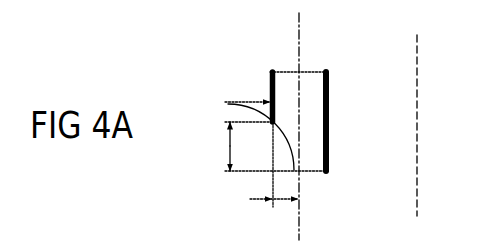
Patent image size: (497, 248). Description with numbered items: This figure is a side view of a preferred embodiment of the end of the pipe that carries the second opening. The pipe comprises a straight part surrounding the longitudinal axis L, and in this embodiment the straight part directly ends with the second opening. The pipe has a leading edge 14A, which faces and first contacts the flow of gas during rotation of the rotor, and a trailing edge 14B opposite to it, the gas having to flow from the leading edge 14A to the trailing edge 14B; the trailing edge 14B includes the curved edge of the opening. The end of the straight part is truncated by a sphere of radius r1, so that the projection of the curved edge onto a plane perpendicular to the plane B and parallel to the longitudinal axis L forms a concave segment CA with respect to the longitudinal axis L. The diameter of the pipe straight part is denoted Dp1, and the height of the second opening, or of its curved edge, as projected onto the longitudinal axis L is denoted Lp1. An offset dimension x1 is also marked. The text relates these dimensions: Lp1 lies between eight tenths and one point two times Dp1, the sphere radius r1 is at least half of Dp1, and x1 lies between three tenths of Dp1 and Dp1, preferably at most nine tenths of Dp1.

The leading edge 14A is at (330, 148).
The trailing edge 14B is at (268, 95).
The longitudinal axis L is at (309, 126).
The plane B is at (430, 128).
The diameter of the pipe straight part Dp1 is at (329, 102).
The concave segment CA is at (283, 132).
The height of the second opening Lp1 is at (203, 146).
The radius of a sphere r1 is at (287, 146).
The offset dimension x1 is at (261, 198).